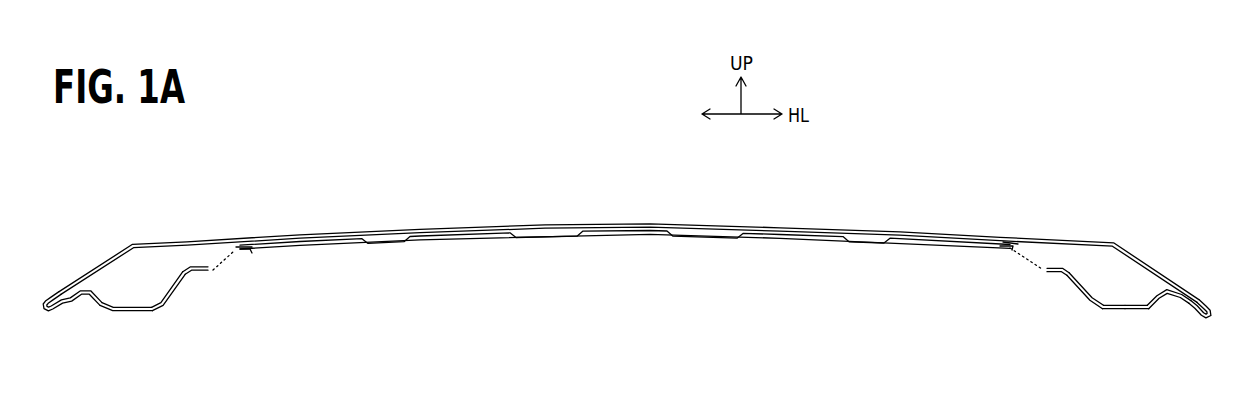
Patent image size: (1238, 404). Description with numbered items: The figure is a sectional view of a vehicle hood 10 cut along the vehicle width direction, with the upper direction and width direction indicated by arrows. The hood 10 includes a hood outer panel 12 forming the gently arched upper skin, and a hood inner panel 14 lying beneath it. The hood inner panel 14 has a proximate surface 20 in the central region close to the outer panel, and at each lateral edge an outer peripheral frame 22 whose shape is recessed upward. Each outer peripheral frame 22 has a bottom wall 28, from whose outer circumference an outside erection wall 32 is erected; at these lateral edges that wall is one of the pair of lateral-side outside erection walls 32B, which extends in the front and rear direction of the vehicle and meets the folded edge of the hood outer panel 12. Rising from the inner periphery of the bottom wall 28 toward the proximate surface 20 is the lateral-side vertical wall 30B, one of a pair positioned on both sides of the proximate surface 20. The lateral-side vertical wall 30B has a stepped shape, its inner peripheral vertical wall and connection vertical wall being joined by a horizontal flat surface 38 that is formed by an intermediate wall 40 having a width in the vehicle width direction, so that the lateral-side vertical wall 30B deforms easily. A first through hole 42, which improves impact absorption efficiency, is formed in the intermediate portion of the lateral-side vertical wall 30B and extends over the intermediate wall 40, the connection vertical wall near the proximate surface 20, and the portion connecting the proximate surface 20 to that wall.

The hood 10 is at (436, 112).
The hood outer panel 12 is at (550, 215).
The hood inner panel 14 is at (551, 249).
The proximate surface 20 is at (1007, 249).
The outer peripheral frame 22 is at (1133, 311).
The bottom wall 28 is at (1118, 305).
The lateral-side vertical wall 30B is at (171, 287).
The outside erection wall 32 is at (627, 243).
The lateral-side outside erection wall 32B is at (100, 292).
The flat surface 38 is at (637, 206).
The intermediate wall 40 is at (1031, 260).
The first through hole 42 is at (225, 252).